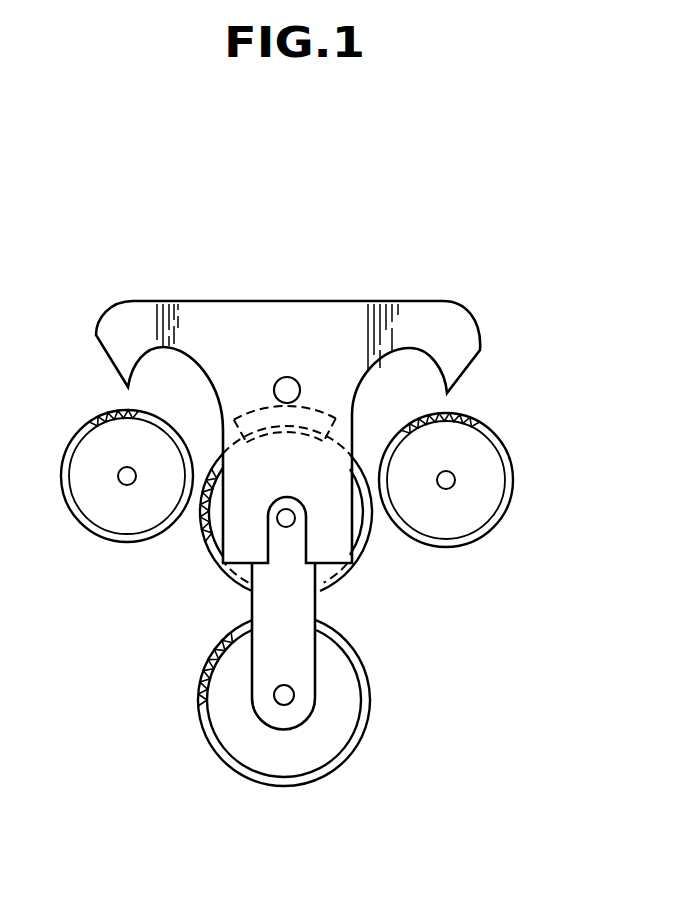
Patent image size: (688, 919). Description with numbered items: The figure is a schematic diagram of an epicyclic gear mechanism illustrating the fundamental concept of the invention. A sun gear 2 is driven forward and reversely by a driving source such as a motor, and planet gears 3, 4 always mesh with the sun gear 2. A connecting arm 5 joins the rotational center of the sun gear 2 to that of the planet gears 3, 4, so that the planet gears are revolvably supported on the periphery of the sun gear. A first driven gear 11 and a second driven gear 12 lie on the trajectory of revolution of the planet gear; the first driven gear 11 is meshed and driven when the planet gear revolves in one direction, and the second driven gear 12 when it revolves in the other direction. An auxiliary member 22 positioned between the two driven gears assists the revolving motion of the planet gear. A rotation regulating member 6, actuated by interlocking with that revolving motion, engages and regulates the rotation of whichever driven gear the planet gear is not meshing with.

The rotation regulating member 6 is at (274, 325).
The auxiliary member 22 is at (318, 427).
The planet gear 3 is at (368, 532).
The planet gear 4 is at (367, 522).
The connecting arm 5 is at (258, 702).
The sun gear 2 is at (345, 706).
The first driven gear 11 is at (92, 453).
The second driven gear 12 is at (478, 463).